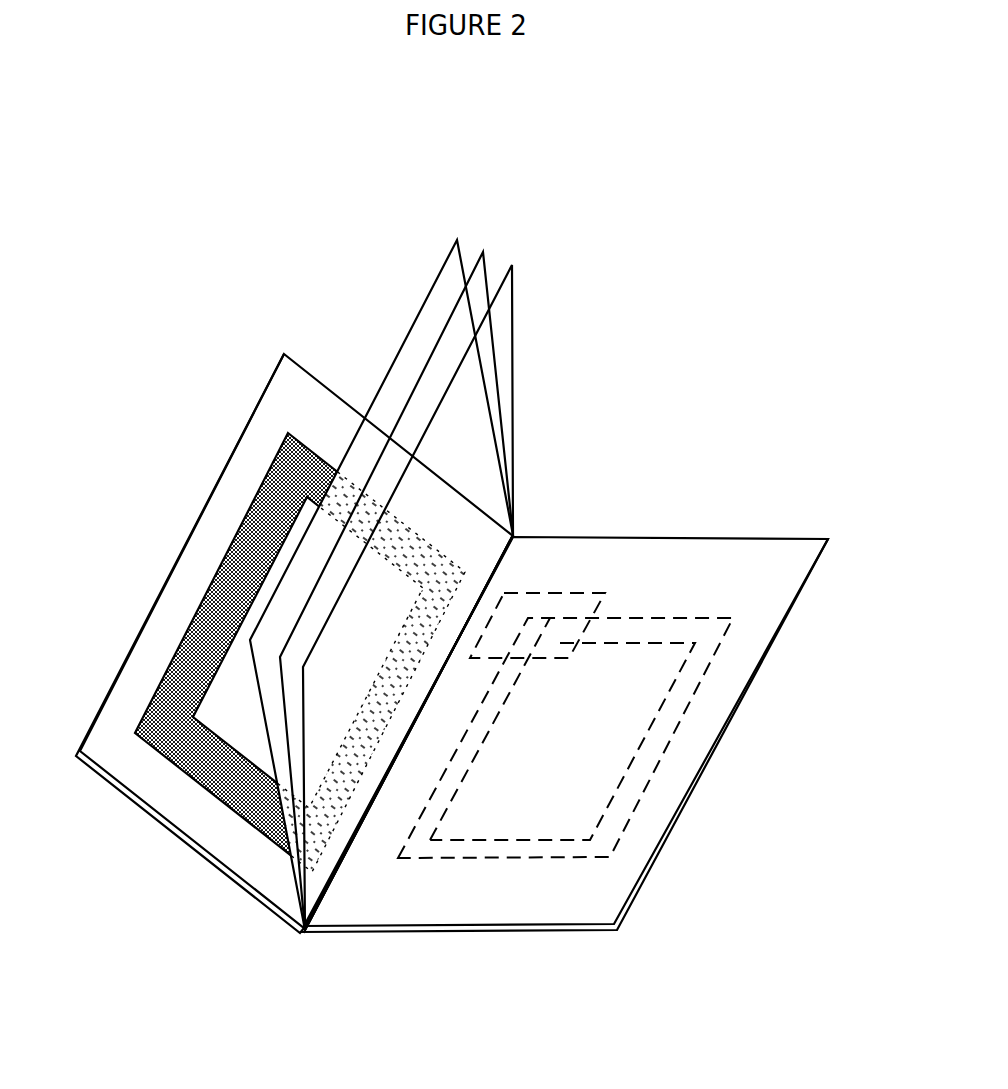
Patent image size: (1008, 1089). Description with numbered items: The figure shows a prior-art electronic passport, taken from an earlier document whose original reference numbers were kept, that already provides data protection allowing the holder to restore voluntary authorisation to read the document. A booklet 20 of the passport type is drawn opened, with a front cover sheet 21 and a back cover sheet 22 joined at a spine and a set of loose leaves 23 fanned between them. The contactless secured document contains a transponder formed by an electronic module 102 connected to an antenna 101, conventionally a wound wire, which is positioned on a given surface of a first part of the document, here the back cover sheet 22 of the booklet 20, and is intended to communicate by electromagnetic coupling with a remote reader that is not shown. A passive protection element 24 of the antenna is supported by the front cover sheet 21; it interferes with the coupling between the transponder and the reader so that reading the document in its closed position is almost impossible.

The booklet 20 is at (469, 552).
The front cover sheet 21 is at (295, 395).
The back cover sheet 22 is at (760, 607).
The set of loose leaves 23 is at (457, 240).
The passive protection element 24 is at (240, 569).
The antenna 101 is at (686, 618).
The electronic module 102 is at (548, 593).